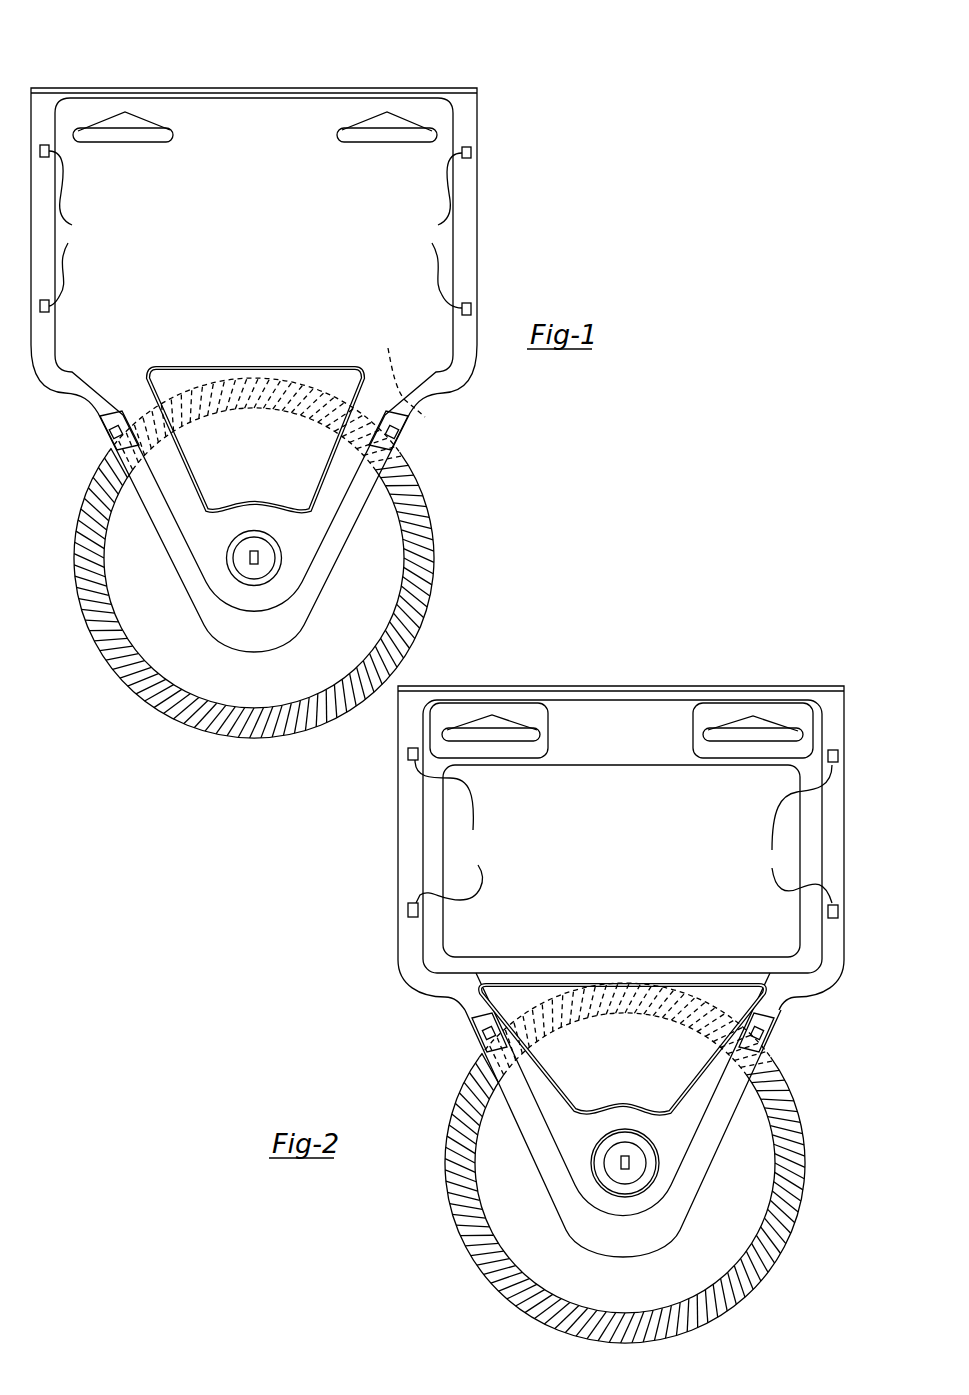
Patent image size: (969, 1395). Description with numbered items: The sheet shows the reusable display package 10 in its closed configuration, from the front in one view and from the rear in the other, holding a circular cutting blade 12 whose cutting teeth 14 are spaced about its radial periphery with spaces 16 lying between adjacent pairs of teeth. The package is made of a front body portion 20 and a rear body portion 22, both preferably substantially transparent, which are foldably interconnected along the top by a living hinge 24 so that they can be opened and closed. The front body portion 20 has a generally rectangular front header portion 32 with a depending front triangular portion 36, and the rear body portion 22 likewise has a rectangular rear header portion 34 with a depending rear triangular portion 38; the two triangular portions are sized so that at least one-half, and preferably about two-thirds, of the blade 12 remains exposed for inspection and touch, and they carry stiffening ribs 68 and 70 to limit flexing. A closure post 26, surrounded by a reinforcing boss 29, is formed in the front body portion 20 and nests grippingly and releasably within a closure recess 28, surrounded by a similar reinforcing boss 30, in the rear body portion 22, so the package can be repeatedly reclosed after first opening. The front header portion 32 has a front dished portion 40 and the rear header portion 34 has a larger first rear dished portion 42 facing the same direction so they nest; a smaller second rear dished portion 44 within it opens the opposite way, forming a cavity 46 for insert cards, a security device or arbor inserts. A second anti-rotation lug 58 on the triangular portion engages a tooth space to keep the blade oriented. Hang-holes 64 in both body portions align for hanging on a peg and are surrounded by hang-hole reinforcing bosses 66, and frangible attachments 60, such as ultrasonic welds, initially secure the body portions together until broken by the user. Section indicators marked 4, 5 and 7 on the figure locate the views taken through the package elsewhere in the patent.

In FIG. 1, the reusable display package 10 is at (515, 185).
In FIG. 2, the reusable display package 10 is at (710, 660).
In FIG. 1, the cutting blade 12 is at (432, 473).
In FIG. 2, the cutting blade 12 is at (812, 1142).
In FIG. 1, the cutting teeth 14 is at (432, 597).
In FIG. 2, the cutting teeth 14 is at (462, 1102).
In FIG. 1, the spaces 16 is at (428, 614).
In FIG. 2, the spaces 16 is at (453, 1112).
In FIG. 1, the front body portion 20 is at (498, 258).
In FIG. 2, the rear body portion 22 is at (830, 855).
In FIG. 1, the living hinge 24 is at (405, 88).
In FIG. 1, the closure post 26 is at (258, 557).
In FIG. 2, the closure recess 28 is at (620, 1190).
In FIG. 1, the reinforcing boss 29 is at (275, 576).
In FIG. 2, the reinforcing boss 30 is at (625, 1137).
In FIG. 1, the front header portion 32 is at (463, 378).
In FIG. 2, the rear header portion 34 is at (398, 797).
In FIG. 1, the front triangular portion 36 is at (214, 618).
In FIG. 2, the rear triangular portion 38 is at (547, 1168).
In FIG. 1, the front dished portion 40 is at (403, 325).
In FIG. 2, the first rear dished portion 42 is at (427, 848).
In FIG. 2, the second rear dished portion 44 is at (447, 868).
In FIG. 1, the cavity 46 is at (422, 417).
In FIG. 2, the cavity 46 is at (445, 935).
In FIG. 1, the second anti-rotation lug 58 is at (122, 414).
In FIG. 1, the frangible attachments 60 is at (387, 430).
In FIG. 2, the frangible attachments 60 is at (822, 1018).
In FIG. 1, the hang-holes 64 is at (128, 118).
In FIG. 2, the hang-holes 64 is at (515, 728).
In FIG. 2, the hang-hole reinforcing bosses 66 is at (505, 755).
In FIG. 1, the stiffening rib 68 is at (183, 455).
In FIG. 2, the stiffening rib 70 is at (543, 1078).
In FIG. 1, the section line 4 is at (52, 474).
In FIG. 1, the section line 5 is at (104, 411).
In FIG. 1, the section line 7 is at (133, 552).